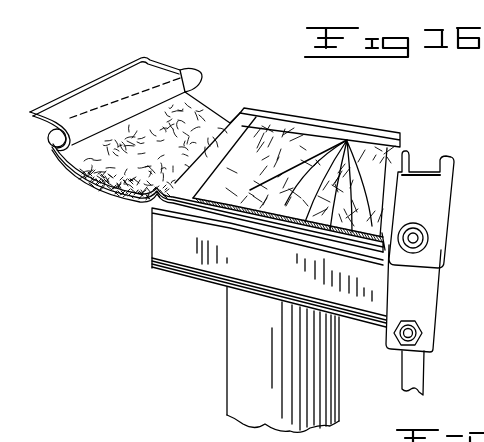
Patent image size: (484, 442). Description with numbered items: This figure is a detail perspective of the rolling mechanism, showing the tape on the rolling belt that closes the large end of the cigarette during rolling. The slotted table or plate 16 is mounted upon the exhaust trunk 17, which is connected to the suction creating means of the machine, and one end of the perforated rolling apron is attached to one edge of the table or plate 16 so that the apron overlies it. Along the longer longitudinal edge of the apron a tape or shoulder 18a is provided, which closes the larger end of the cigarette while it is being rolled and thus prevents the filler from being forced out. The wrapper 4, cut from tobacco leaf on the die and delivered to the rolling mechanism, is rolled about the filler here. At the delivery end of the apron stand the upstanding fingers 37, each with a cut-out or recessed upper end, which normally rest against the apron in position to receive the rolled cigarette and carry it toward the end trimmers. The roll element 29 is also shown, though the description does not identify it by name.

The hinged roll cover / roller 29 is at (128, 102).
The shoulder 18a is at (127, 194).
The wrapper 4 is at (347, 142).
The slotted table or plate 16 is at (399, 139).
The upstanding fingers 37 is at (443, 261).
The exhaust trunk 17 is at (233, 344).